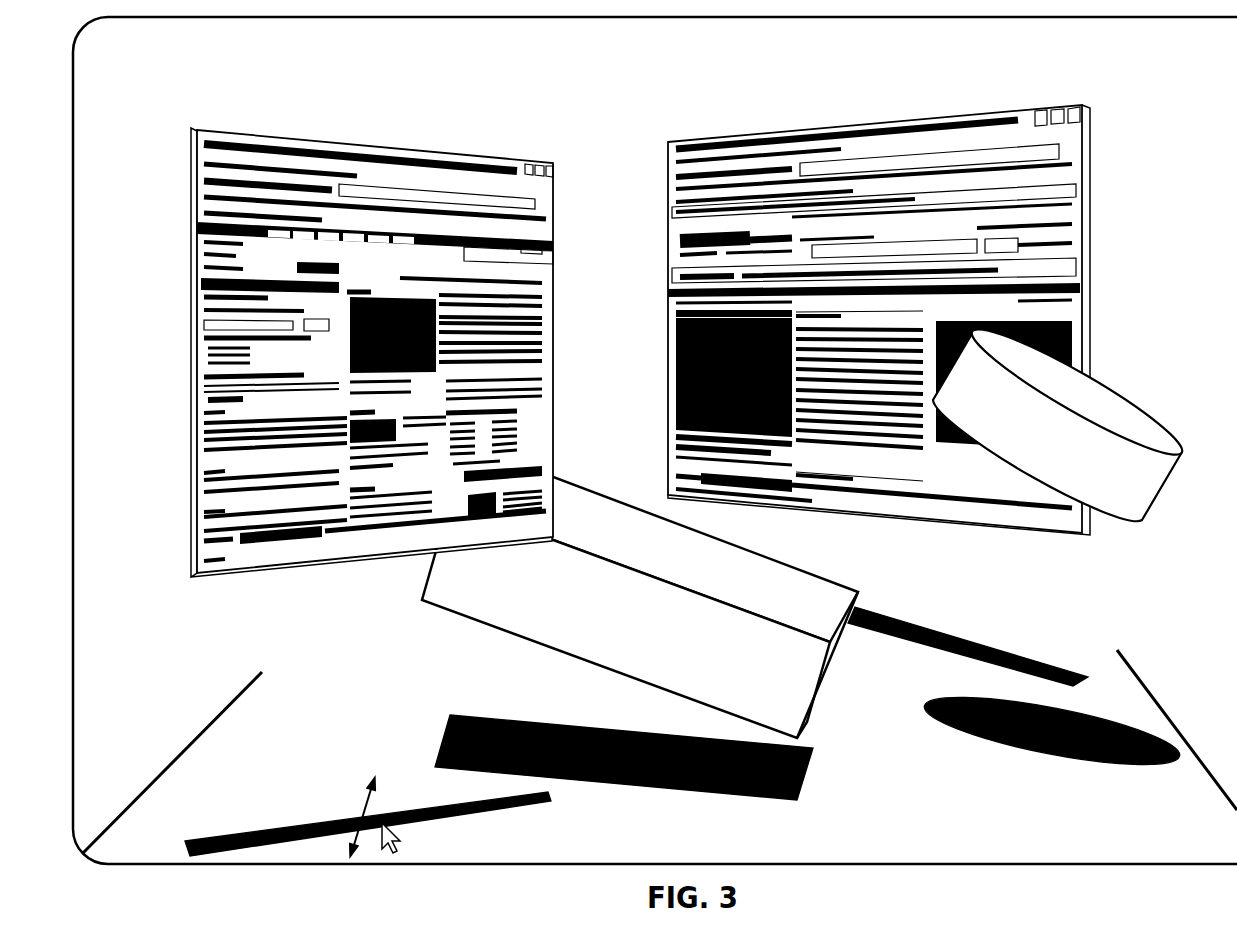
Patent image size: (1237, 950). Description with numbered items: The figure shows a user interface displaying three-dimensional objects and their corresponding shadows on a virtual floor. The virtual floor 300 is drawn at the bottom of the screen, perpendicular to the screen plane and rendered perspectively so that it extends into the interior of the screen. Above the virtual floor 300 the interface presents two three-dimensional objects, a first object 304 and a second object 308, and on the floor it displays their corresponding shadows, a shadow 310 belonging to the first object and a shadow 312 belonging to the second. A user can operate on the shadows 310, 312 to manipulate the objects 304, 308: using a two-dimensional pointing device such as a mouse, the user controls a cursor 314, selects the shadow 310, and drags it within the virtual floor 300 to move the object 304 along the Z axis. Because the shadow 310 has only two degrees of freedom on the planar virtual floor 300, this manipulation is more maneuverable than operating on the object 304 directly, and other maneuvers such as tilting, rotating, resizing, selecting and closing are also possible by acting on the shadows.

The virtual floor 300 is at (135, 802).
The 3D object 304 is at (192, 408).
The 3D object 308 is at (1135, 407).
The shadow 310 is at (297, 826).
The shadow 312 is at (965, 737).
The cursor 314 is at (388, 827).